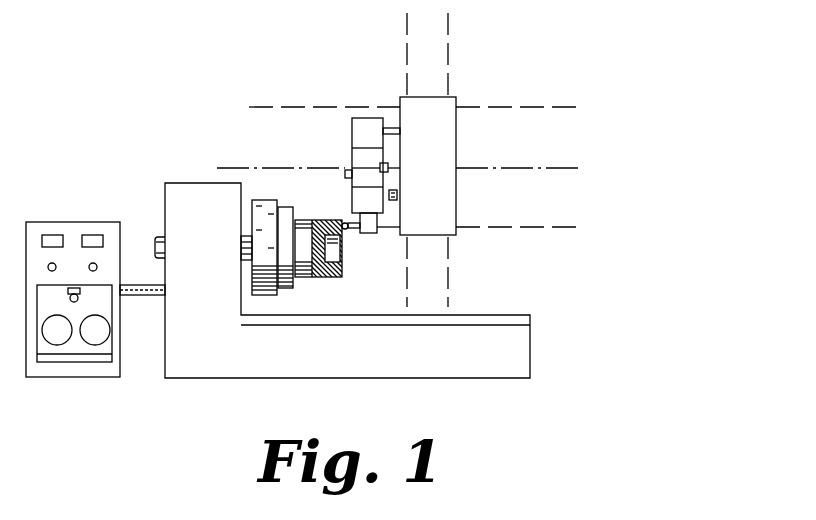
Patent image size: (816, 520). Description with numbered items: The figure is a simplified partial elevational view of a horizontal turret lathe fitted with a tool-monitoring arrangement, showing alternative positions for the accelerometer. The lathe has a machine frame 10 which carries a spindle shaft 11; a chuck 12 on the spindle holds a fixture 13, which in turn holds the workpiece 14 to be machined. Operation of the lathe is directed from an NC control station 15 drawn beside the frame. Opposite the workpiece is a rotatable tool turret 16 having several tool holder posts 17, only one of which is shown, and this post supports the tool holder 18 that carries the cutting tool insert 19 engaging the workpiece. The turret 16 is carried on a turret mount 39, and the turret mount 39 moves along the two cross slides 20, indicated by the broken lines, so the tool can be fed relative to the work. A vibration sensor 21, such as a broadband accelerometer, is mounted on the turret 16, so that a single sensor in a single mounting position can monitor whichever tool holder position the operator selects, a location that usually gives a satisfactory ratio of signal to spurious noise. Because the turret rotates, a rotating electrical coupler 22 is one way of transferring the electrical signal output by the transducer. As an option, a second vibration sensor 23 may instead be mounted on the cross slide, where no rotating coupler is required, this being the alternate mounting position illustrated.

The machine frame 10 is at (530, 350).
The spindle shaft 11 is at (155, 237).
The chuck 12 is at (258, 200).
The fixture 13 is at (288, 207).
The workpiece 14 is at (322, 278).
The NC control station 15 is at (55, 222).
The rotatable tool turret 16 is at (368, 118).
The tool holder post 17 is at (370, 233).
The tool holder 18 is at (347, 222).
The cutting tool insert 19 is at (345, 228).
The cross slides 20 is at (445, 62).
The vibration sensor 21 is at (345, 172).
The rotating electrical coupler 22 is at (388, 167).
The second vibration sensor 23 is at (397, 195).
The turret mount 39 is at (450, 157).